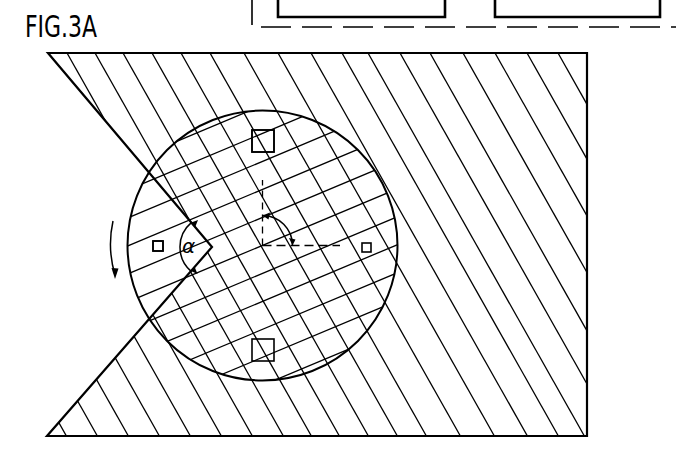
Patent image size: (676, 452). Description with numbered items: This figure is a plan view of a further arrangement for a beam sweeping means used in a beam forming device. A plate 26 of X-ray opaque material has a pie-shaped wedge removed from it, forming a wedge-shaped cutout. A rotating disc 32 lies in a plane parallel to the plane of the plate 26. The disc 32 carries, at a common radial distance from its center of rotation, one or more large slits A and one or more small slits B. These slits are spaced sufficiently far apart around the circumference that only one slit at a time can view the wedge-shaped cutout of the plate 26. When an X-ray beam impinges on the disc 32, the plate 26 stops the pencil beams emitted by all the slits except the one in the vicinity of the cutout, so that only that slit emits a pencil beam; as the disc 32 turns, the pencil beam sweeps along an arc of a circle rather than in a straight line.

The plate 26 is at (587, 222).
The rotating disc 32 is at (326, 126).
The large slits A is at (264, 130).
The small slits B is at (155, 238).